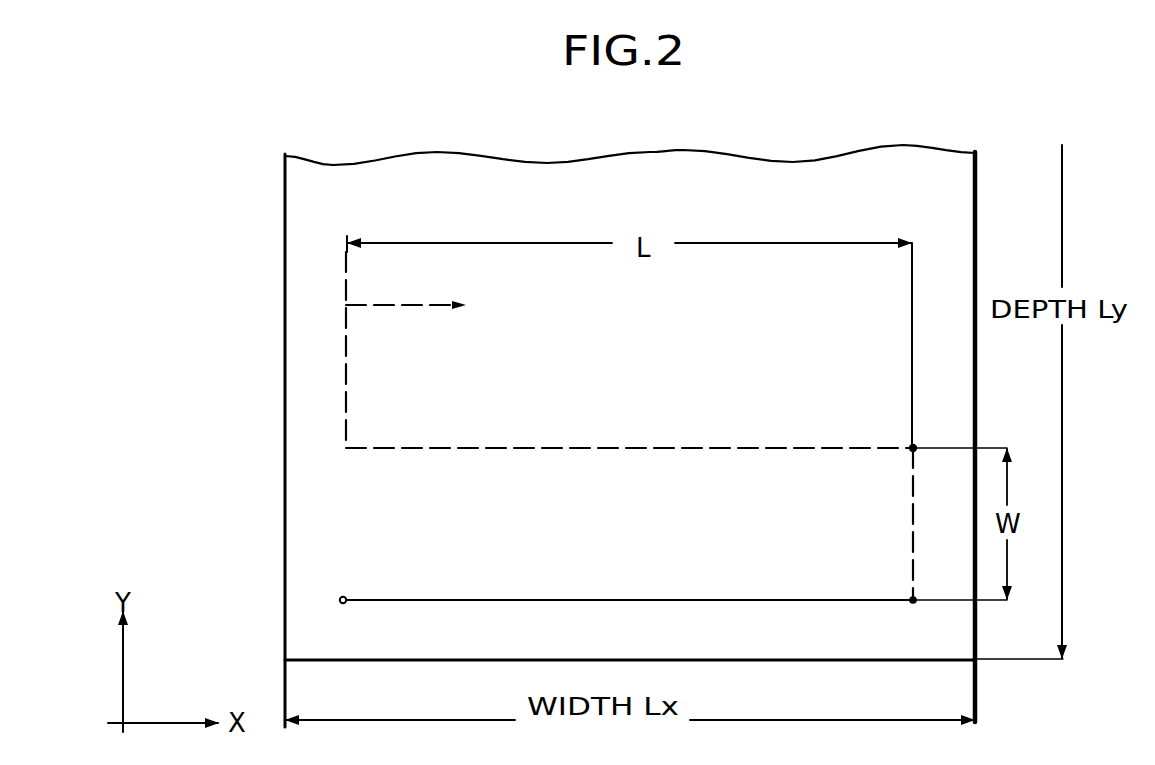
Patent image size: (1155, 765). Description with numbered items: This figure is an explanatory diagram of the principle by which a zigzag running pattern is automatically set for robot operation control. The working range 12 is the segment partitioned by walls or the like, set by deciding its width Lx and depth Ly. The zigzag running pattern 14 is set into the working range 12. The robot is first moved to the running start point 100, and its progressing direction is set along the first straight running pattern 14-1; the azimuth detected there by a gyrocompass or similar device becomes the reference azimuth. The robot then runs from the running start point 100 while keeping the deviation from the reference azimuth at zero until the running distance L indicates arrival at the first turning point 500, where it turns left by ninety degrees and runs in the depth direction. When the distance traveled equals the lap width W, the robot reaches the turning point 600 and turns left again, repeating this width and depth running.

The working range 12 is at (285, 335).
The zigzag running pattern 14 is at (585, 447).
The first straight running pattern 14-1 is at (610, 598).
The running start point 100 is at (341, 604).
The first turning point 500 is at (912, 603).
The turning point 600 is at (914, 447).